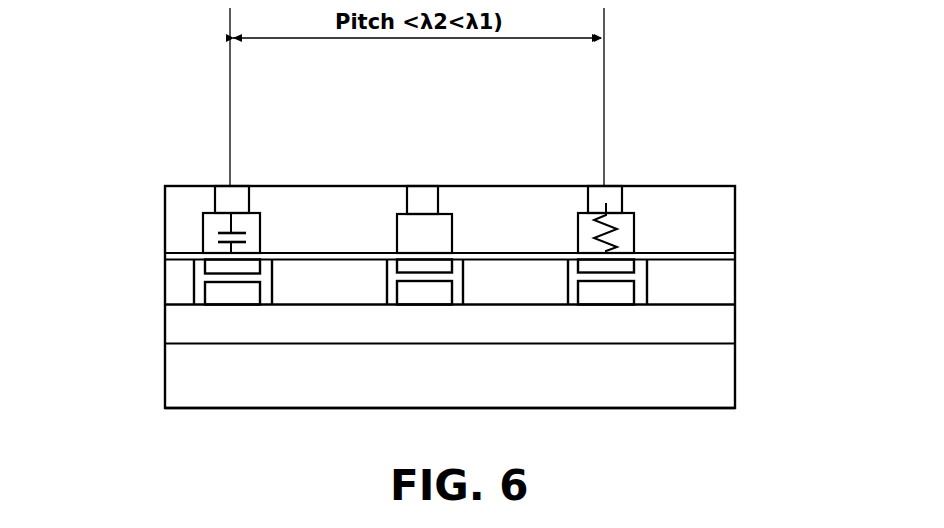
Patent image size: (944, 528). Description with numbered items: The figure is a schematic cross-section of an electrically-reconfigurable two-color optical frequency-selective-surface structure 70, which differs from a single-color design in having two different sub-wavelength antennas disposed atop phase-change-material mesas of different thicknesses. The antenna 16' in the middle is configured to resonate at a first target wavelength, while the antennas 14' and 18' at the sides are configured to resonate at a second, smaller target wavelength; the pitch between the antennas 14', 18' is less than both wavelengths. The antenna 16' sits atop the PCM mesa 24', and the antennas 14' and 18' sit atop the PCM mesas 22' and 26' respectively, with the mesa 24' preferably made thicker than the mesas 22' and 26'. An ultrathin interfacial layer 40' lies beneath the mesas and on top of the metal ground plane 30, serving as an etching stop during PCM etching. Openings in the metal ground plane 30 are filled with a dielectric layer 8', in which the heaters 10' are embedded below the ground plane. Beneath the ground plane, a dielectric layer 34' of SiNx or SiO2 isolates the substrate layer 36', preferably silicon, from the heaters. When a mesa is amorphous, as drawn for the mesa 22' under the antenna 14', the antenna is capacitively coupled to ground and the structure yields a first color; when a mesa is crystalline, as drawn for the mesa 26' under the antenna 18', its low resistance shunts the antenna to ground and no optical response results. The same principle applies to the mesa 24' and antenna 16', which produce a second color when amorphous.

The electrically-reconfigurable 2-color optical frequency-selective-surface structur 70 is at (487, 241).
The antenna 14' is at (203, 155).
The antenna 16' is at (454, 157).
The antenna 18' is at (642, 156).
The PCM mesa 22' is at (155, 233).
The PCM mesa 24' is at (390, 183).
The PCM mesa 26' is at (712, 224).
The interfacial layer 40' is at (513, 247).
The dielectric layer 8' is at (472, 279).
The heater 10' is at (348, 313).
The metal ground plane 30 is at (703, 288).
The dielectric layer 34' is at (516, 366).
The substrate layer 36' is at (501, 428).